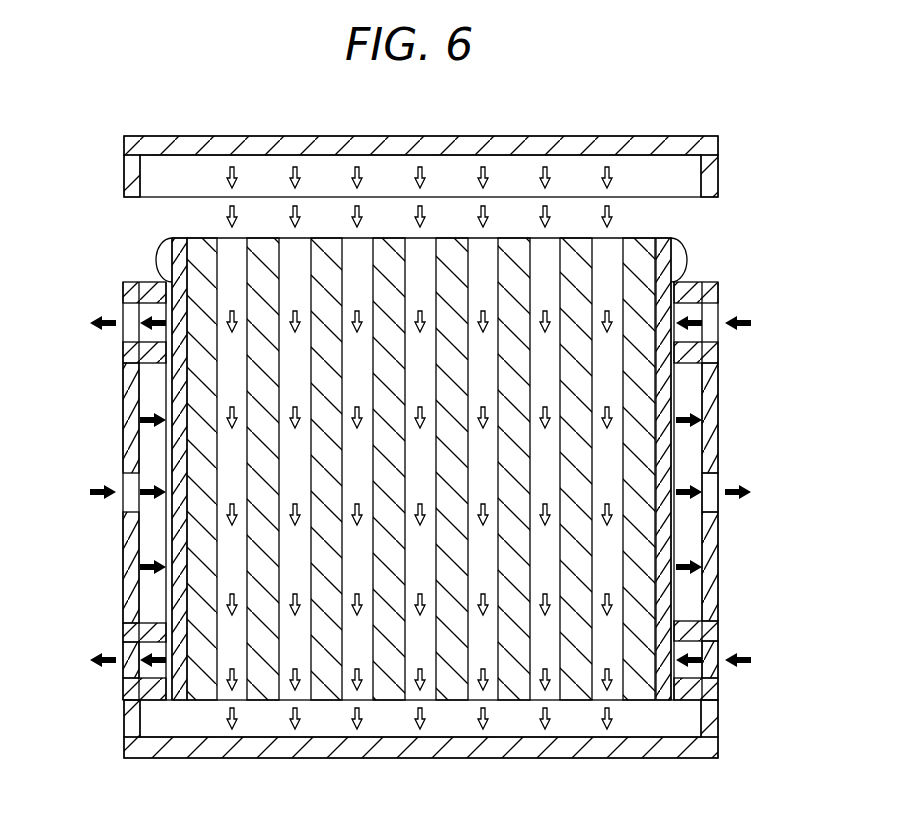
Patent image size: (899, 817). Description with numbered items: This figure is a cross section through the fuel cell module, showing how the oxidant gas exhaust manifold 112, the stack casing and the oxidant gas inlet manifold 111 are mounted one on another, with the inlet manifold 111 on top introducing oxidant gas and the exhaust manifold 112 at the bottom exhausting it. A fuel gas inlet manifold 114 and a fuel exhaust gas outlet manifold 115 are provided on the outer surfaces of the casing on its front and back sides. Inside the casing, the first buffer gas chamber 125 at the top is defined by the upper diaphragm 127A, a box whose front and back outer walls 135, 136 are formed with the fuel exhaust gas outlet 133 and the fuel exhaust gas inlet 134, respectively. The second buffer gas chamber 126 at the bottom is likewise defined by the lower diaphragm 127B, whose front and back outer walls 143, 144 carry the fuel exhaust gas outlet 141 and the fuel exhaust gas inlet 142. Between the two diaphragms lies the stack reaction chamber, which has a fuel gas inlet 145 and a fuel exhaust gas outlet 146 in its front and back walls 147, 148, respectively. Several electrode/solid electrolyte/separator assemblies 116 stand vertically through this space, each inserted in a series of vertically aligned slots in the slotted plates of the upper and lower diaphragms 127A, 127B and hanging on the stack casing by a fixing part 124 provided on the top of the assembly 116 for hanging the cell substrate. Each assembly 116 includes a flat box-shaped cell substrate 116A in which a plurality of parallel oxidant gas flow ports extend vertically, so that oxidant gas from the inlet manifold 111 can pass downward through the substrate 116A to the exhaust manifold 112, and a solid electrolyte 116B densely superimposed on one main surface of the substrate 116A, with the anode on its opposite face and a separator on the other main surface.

The oxidant gas inlet manifold 111 is at (455, 178).
The oxidant gas exhaust manifold 112 is at (406, 720).
The fuel gas inlet manifold 114 is at (157, 550).
The fuel exhaust gas outlet manifold 115 is at (690, 548).
The electrode/solid electrolyte/separator assembly 116 is at (814, 380).
The cell substrate 116A is at (635, 402).
The solid electrolyte 116B is at (663, 448).
The fixing part 124 is at (166, 262).
The first buffer gas chamber 125 is at (690, 308).
The second buffer gas chamber 126 is at (718, 642).
The upper diaphragm 127A is at (712, 302).
The lower diaphragm 127B is at (712, 686).
The fuel exhaust gas outlet 133 is at (128, 338).
The fuel exhaust gas inlet 134 is at (720, 308).
The front outer wall 135 is at (122, 296).
The back outer wall 136 is at (712, 352).
The fuel exhaust gas outlet 141 is at (125, 686).
The fuel exhaust gas inlet 142 is at (712, 670).
The front outer wall 143 is at (126, 700).
The back outer wall 144 is at (720, 703).
The fuel gas inlet 145 is at (130, 508).
The fuel exhaust gas outlet 146 is at (716, 507).
The front wall 147 is at (138, 411).
The back wall 148 is at (712, 462).